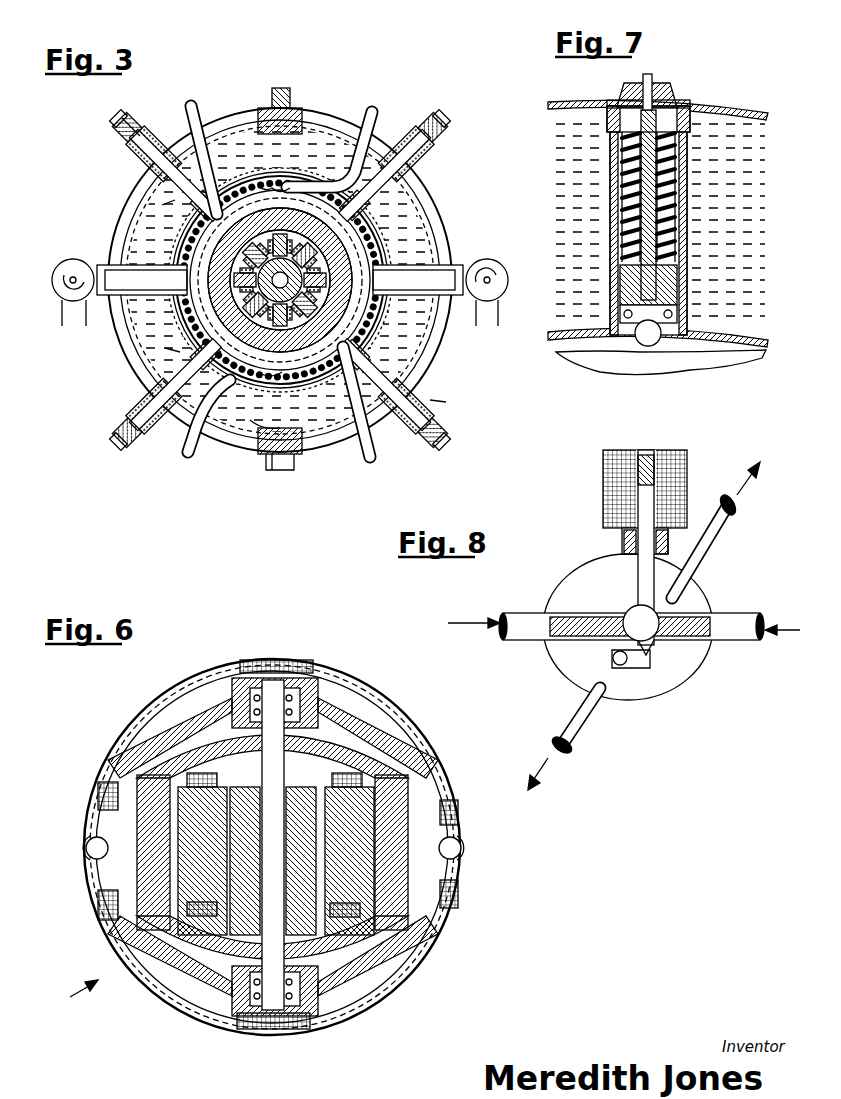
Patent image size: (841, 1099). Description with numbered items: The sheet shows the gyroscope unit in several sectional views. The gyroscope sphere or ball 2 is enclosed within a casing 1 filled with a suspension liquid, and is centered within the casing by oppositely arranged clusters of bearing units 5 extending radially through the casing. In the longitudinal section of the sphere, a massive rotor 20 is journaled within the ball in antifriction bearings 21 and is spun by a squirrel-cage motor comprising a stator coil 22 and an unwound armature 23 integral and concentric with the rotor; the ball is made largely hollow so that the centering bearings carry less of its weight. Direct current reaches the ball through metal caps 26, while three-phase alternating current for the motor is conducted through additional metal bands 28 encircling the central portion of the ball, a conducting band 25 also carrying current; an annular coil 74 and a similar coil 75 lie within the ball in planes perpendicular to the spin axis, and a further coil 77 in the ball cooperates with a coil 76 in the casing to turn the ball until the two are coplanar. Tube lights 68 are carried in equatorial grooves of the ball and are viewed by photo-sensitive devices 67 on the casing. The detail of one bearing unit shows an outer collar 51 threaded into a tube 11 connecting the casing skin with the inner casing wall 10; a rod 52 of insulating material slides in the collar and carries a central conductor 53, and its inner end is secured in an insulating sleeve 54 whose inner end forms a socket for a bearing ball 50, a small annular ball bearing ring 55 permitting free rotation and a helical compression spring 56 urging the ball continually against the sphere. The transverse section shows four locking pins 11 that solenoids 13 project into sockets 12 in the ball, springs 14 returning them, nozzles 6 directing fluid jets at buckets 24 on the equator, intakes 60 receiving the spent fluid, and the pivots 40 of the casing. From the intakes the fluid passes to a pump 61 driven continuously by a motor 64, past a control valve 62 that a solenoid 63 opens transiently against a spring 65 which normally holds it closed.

In FIG. 7, the casing 1 is at (562, 110).
In FIG. 3, the gyroscope sphere 2 is at (295, 370).
In FIG. 7, the gyroscope sphere 2 is at (661, 362).
In FIG. 6, the gyroscope sphere 2 is at (81, 996).
In FIG. 7, the bearing units 5 is at (698, 203).
In FIG. 3, the nozzle 6 is at (300, 185).
In FIG. 3, the inner casing wall 10 is at (362, 222).
In FIG. 7, the inner casing wall 10 is at (698, 332).
In FIG. 3, the tube 11 is at (317, 289).
In FIG. 7, the tube 11 is at (612, 188).
In FIG. 3, the sockets 12 is at (200, 222).
In FIG. 3, the solenoids 13 is at (135, 150).
In FIG. 3, the springs 14 is at (148, 125).
In FIG. 3, the gyroscope rotor 20 is at (365, 332).
In FIG. 6, the gyroscope rotor 20 is at (137, 808).
In FIG. 6, the antifriction bearings 21 is at (222, 705).
In FIG. 6, the stator coil 22 is at (200, 773).
In FIG. 3, the unwound armature 23 is at (280, 280).
In FIG. 6, the unwound armature 23 is at (248, 935).
In FIG. 3, the buckets 24 is at (262, 184).
In FIG. 6, the conducting band 25 is at (290, 660).
In FIG. 6, the metal caps 26 is at (372, 682).
In FIG. 6, the metal bands 28 is at (135, 710).
In FIG. 3, the pivots 40 is at (281, 88).
In FIG. 7, the bearing ball 50 is at (644, 345).
In FIG. 7, the outer collar 51 is at (682, 105).
In FIG. 7, the rod 52 is at (630, 100).
In FIG. 7, the conductor 53 is at (652, 84).
In FIG. 7, the sleeve 54 is at (678, 288).
In FIG. 7, the ball bearing ring 55 is at (618, 314).
In FIG. 7, the compression spring 56 is at (680, 160).
In FIG. 3, the intake 60 is at (195, 100).
In FIG. 8, the intake 60 is at (535, 612).
In FIG. 8, the pump 61 is at (628, 627).
In FIG. 8, the control valve 62 is at (652, 650).
In FIG. 8, the solenoid 63 is at (685, 470).
In FIG. 8, the motor 64 is at (655, 700).
In FIG. 8, the spring 65 is at (646, 450).
In FIG. 3, the photo-sensitive devices 67 is at (72, 302).
In FIG. 3, the tube lights 68 is at (192, 246).
In FIG. 6, the tube lights 68 is at (86, 852).
In FIG. 6, the annular coil 74 is at (98, 792).
In FIG. 6, the annular coil 75 is at (100, 900).
In FIG. 3, the casing coil 76 is at (195, 420).
In FIG. 3, the ball coil 77 is at (250, 440).
In FIG. 6, the ball coil 77 is at (232, 690).